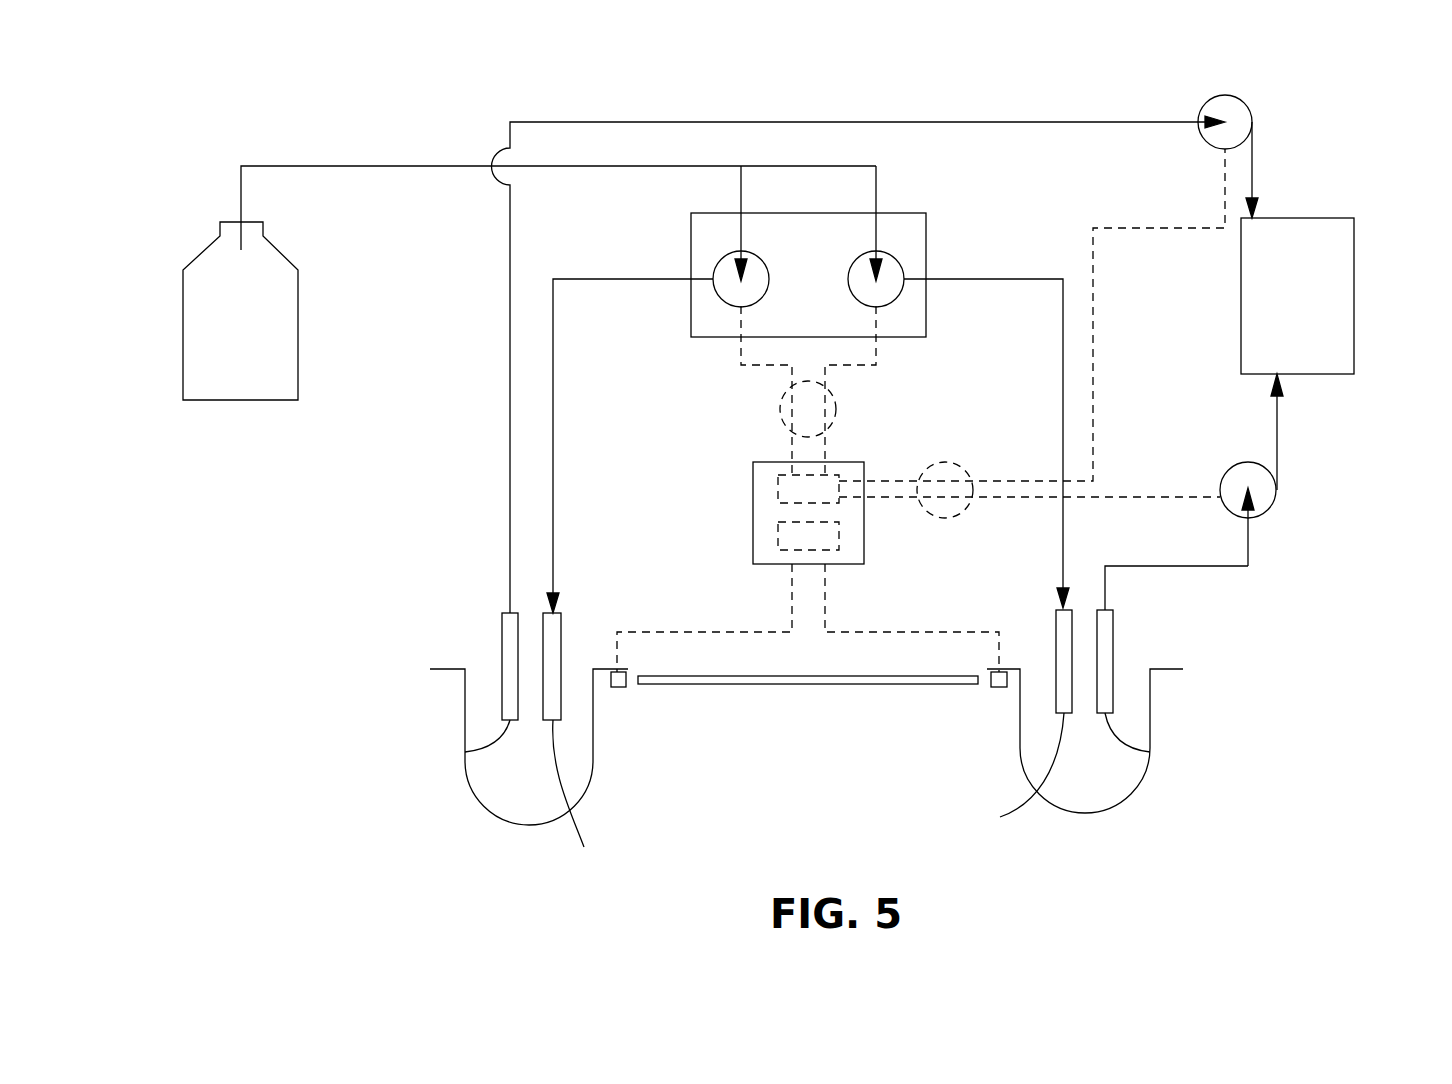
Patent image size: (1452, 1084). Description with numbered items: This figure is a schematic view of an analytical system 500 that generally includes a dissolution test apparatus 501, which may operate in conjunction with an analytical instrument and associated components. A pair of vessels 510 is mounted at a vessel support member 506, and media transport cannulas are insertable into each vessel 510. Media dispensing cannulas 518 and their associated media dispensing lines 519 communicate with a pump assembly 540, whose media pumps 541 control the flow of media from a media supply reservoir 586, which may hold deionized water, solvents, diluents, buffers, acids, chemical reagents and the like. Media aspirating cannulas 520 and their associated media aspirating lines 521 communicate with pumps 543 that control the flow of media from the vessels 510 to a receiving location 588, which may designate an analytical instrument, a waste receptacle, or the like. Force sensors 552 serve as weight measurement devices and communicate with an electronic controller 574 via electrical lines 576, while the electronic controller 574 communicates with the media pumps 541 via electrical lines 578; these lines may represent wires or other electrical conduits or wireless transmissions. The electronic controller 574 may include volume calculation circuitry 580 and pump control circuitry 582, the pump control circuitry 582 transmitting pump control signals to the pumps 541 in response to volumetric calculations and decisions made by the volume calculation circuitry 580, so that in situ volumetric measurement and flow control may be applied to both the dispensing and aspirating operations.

The analytical system 500 is at (1314, 134).
The dissolution test apparatus 501 is at (1240, 652).
The vessel support member 506 is at (790, 690).
The vessels 510 is at (486, 810).
The media dispensing cannulas 518 is at (807, 745).
The media dispensing lines 519 is at (553, 497).
The media aspirating cannulas 520 is at (465, 752).
The media aspirating lines 521 is at (509, 448).
The pump assembly 540 is at (925, 222).
The media pumps 541 is at (720, 262).
The pumps 543 is at (1204, 106).
The force sensors 552 is at (618, 690).
The electronic controller 574 is at (768, 460).
The electrical lines 576 is at (705, 632).
The electrical lines 578 is at (836, 408).
The volume calculation circuitry 580 is at (778, 534).
The pump control circuitry 582 is at (778, 490).
The media supply reservoir 586 is at (250, 400).
The receiving location 588 is at (1330, 374).